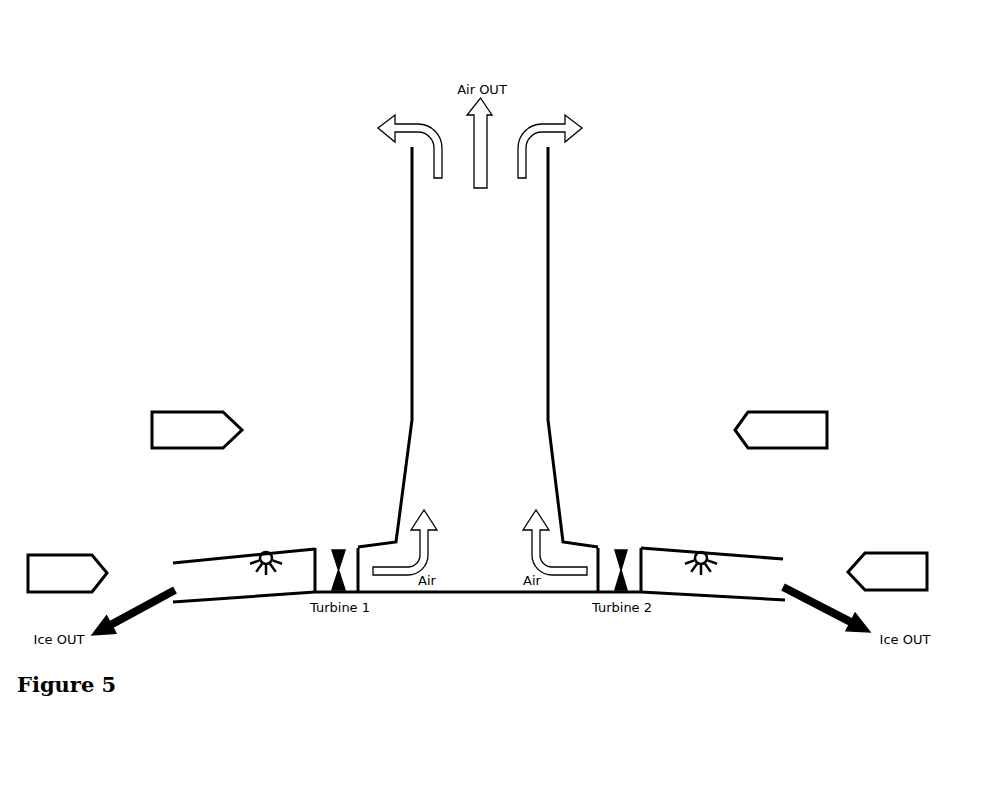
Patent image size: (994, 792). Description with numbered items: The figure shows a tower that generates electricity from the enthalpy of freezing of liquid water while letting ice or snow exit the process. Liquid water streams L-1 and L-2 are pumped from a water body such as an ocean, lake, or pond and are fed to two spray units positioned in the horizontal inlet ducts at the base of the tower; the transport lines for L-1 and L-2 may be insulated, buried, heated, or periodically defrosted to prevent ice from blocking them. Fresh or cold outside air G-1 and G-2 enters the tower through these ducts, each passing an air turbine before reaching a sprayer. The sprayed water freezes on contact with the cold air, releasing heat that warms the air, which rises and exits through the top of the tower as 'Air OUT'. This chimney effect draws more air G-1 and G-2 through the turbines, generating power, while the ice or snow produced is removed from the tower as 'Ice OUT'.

The air entering the tower G-1 is at (107, 573).
The air entering the tower G-2 is at (848, 572).
The liquid water stream L-1 is at (242, 430).
The liquid water stream L-2 is at (735, 429).